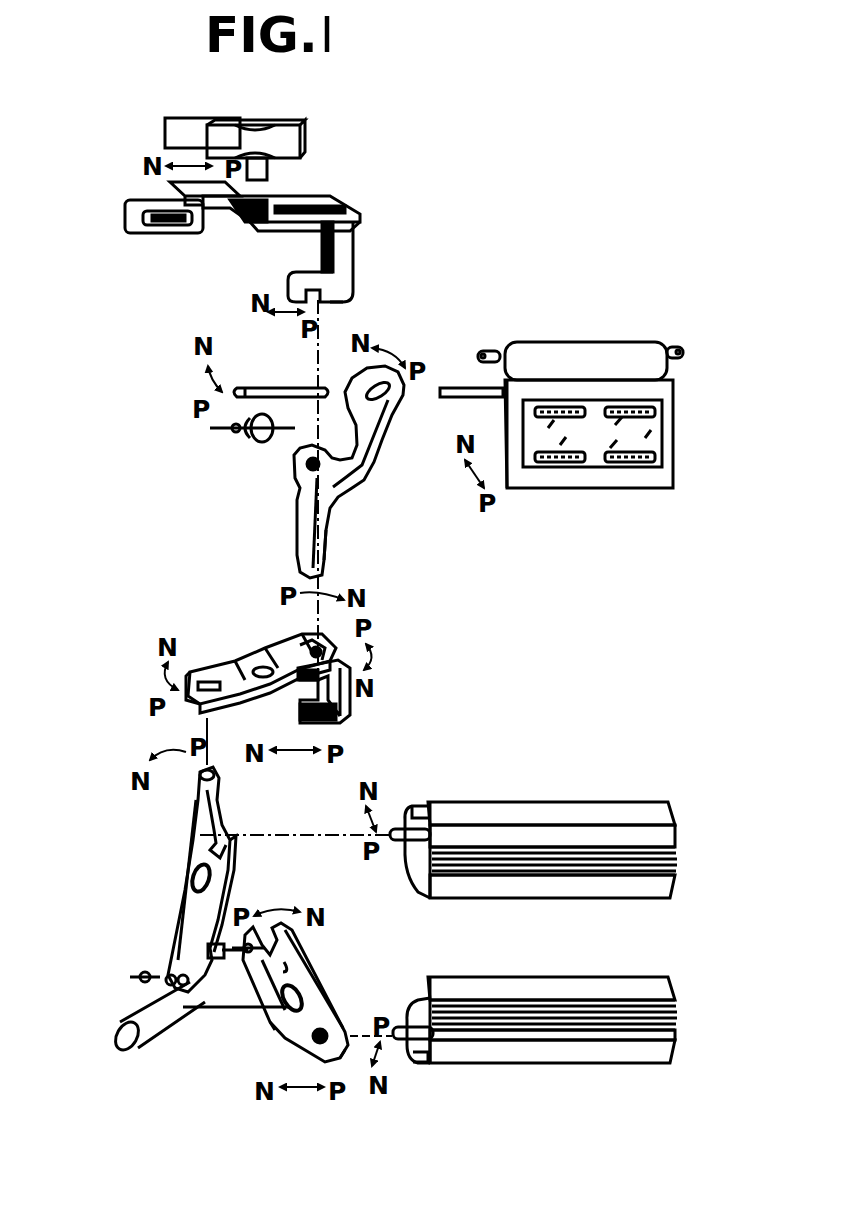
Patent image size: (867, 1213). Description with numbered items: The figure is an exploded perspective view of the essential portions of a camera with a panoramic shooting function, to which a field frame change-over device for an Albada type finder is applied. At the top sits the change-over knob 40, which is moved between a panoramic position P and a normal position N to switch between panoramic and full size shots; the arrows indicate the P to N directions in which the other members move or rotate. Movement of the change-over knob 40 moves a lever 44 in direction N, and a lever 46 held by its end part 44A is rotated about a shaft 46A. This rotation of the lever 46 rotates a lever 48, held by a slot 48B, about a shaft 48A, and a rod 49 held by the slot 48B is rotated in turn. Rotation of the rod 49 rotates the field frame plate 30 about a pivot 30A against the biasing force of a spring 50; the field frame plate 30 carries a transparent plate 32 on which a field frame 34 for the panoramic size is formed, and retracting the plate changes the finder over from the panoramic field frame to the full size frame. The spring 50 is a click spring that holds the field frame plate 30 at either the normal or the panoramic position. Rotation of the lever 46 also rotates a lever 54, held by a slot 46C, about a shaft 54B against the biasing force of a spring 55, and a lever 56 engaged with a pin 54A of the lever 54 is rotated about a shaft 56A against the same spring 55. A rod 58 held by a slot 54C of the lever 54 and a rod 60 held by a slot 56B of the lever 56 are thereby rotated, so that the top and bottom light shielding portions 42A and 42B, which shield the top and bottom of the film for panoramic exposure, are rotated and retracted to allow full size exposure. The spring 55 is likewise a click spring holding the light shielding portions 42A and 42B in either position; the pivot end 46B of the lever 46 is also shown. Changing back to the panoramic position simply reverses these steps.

The field frame plate 30 is at (505, 480).
The pivot 30A is at (676, 347).
The transparent plate 32 is at (648, 425).
The field frame for the panoramic size 34 is at (648, 457).
The change-over knob 40 is at (300, 148).
The top light shielding portion 42A is at (648, 884).
The bottom light shielding portion 42B is at (650, 993).
The lever 44 is at (355, 212).
The end part 44A is at (355, 288).
The lever 46 is at (227, 667).
The shaft 46A is at (273, 657).
The shift lever pivot 46B is at (327, 648).
The slot 46C is at (193, 687).
The lever 48 is at (372, 470).
The shaft 48A is at (333, 492).
The slot 48B is at (357, 383).
The rod 49 is at (452, 385).
The spring 50 is at (258, 448).
The lever 54 is at (197, 857).
The pin 54A is at (218, 944).
The shaft 54B is at (192, 884).
The slot 54C is at (217, 850).
The spring 55 is at (132, 1007).
The lever 56 is at (294, 974).
The shaft 56A is at (277, 1032).
The slot 56B is at (342, 1056).
The rod 58 is at (420, 783).
The rod 60 is at (408, 1010).